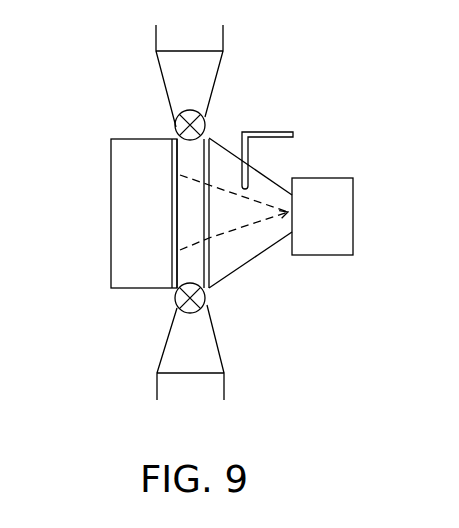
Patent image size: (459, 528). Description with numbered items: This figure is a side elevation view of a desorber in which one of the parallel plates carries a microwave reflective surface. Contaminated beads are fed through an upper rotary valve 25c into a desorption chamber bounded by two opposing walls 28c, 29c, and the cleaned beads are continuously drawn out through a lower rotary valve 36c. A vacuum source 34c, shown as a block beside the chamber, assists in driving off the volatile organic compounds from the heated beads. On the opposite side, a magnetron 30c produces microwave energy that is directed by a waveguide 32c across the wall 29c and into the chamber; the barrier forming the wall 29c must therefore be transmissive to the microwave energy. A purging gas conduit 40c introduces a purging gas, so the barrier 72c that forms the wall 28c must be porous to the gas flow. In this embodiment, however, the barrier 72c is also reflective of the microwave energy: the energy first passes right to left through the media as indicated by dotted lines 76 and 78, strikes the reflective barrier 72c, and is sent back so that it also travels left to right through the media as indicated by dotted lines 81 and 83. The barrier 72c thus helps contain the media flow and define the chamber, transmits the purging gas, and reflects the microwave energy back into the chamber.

The rotary valve 25c is at (207, 123).
The wall 28c is at (173, 270).
The wall 29c is at (212, 270).
The magnetron 30c is at (344, 206).
The waveguide 32c is at (255, 196).
The vacuum source 34c is at (125, 150).
The rotary valve 36c is at (207, 301).
The purging gas conduit 40c is at (273, 132).
The barrier 72c is at (173, 238).
The dotted line 76 is at (272, 205).
The dotted line 78 is at (243, 231).
The dotted line 81 is at (218, 162).
The dotted line 83 is at (219, 260).